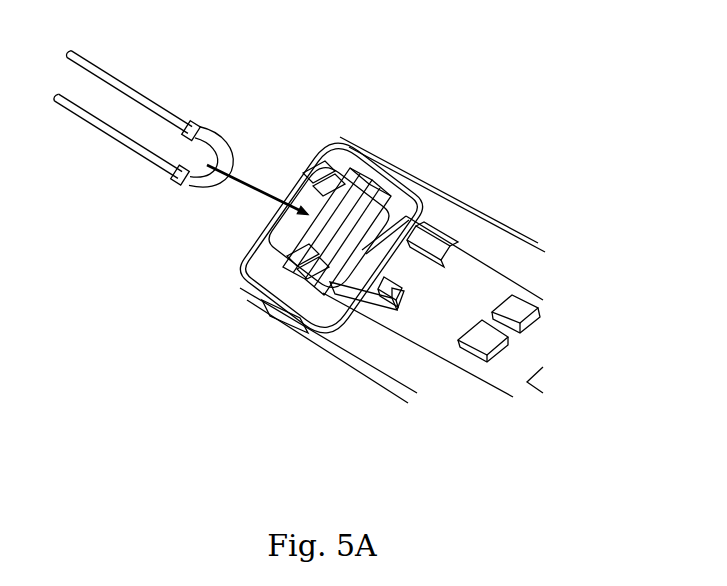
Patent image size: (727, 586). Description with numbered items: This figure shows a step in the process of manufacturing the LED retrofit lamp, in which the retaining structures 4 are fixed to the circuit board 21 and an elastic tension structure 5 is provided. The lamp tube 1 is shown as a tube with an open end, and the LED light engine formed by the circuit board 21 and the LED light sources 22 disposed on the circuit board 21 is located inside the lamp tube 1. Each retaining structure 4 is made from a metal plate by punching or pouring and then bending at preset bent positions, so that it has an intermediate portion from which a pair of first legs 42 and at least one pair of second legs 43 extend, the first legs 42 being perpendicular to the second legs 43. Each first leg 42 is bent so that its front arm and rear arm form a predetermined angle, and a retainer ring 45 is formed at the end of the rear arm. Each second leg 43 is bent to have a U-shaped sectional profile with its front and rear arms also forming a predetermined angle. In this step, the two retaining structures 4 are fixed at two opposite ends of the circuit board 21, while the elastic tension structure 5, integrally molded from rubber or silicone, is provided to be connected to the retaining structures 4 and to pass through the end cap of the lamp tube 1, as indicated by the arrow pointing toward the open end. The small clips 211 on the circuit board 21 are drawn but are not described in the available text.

The lamp tube 1 is at (517, 230).
The elastic tension structure 5 is at (155, 80).
The circuit board 21 is at (462, 272).
The clips 211 is at (433, 272).
The LED light source 22 is at (517, 310).
The retaining structure 4 is at (387, 205).
The second leg 43 is at (363, 176).
The retainer ring 45 is at (373, 307).
The first leg 42 is at (292, 325).